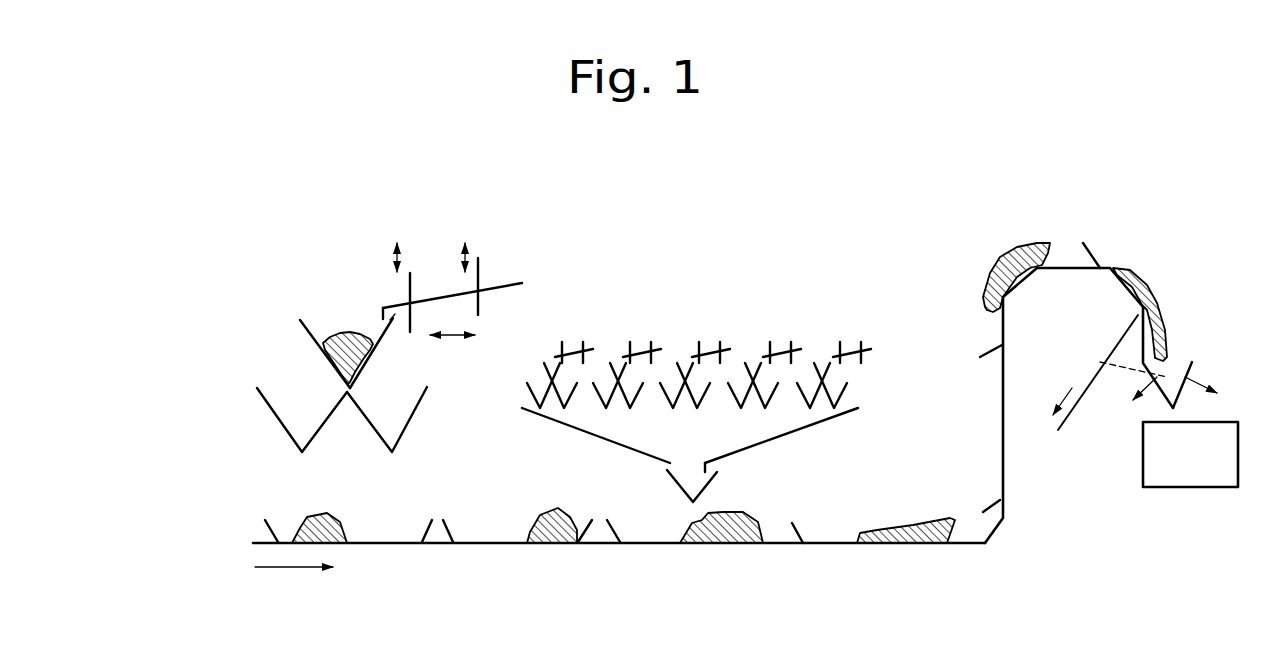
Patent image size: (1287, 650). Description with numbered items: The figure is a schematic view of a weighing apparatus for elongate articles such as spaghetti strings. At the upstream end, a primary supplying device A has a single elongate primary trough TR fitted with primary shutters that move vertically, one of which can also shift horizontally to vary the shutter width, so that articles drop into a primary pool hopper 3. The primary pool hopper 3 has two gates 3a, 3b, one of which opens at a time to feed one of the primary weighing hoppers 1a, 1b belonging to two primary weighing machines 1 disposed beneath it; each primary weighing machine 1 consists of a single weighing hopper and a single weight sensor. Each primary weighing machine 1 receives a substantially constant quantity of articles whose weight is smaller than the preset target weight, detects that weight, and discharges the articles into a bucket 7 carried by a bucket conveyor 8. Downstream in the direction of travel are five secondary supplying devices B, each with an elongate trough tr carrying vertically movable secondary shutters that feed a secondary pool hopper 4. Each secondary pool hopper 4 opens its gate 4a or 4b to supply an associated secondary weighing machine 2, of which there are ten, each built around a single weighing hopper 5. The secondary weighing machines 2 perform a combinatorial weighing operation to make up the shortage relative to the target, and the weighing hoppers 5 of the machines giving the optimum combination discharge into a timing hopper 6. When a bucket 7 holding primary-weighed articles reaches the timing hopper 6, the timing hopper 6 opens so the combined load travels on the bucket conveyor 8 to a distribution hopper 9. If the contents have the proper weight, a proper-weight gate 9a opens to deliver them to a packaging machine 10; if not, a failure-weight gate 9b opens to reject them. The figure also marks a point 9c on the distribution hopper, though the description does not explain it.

The primary weighing machine 1 is at (266, 397).
The primary weighing hopper 1a is at (420, 418).
The primary weighing hopper 1b is at (278, 402).
The secondary weighing machine 2 is at (858, 415).
The primary pool hopper 3 is at (326, 326).
The gate 3a is at (370, 357).
The gate 3b is at (327, 342).
The secondary pool hopper 4 is at (726, 382).
The gate 4a is at (565, 360).
The gate 4b is at (550, 365).
The secondary weighing hopper 5 is at (853, 390).
The timing hopper 6 is at (702, 483).
The bucket 7 is at (375, 537).
The bucket conveyor 8 is at (1005, 488).
The distribution hopper 9 is at (1153, 372).
The proper-weight gate 9a is at (1193, 373).
The failure-weight gate 9b is at (1150, 380).
The hopper pivot 9c is at (1120, 361).
The packaging machine 10 is at (1143, 467).
The primary supplying device A is at (358, 255).
The secondary supplying device B is at (751, 344).
The primary trough TR is at (503, 282).
The trough tr is at (738, 320).